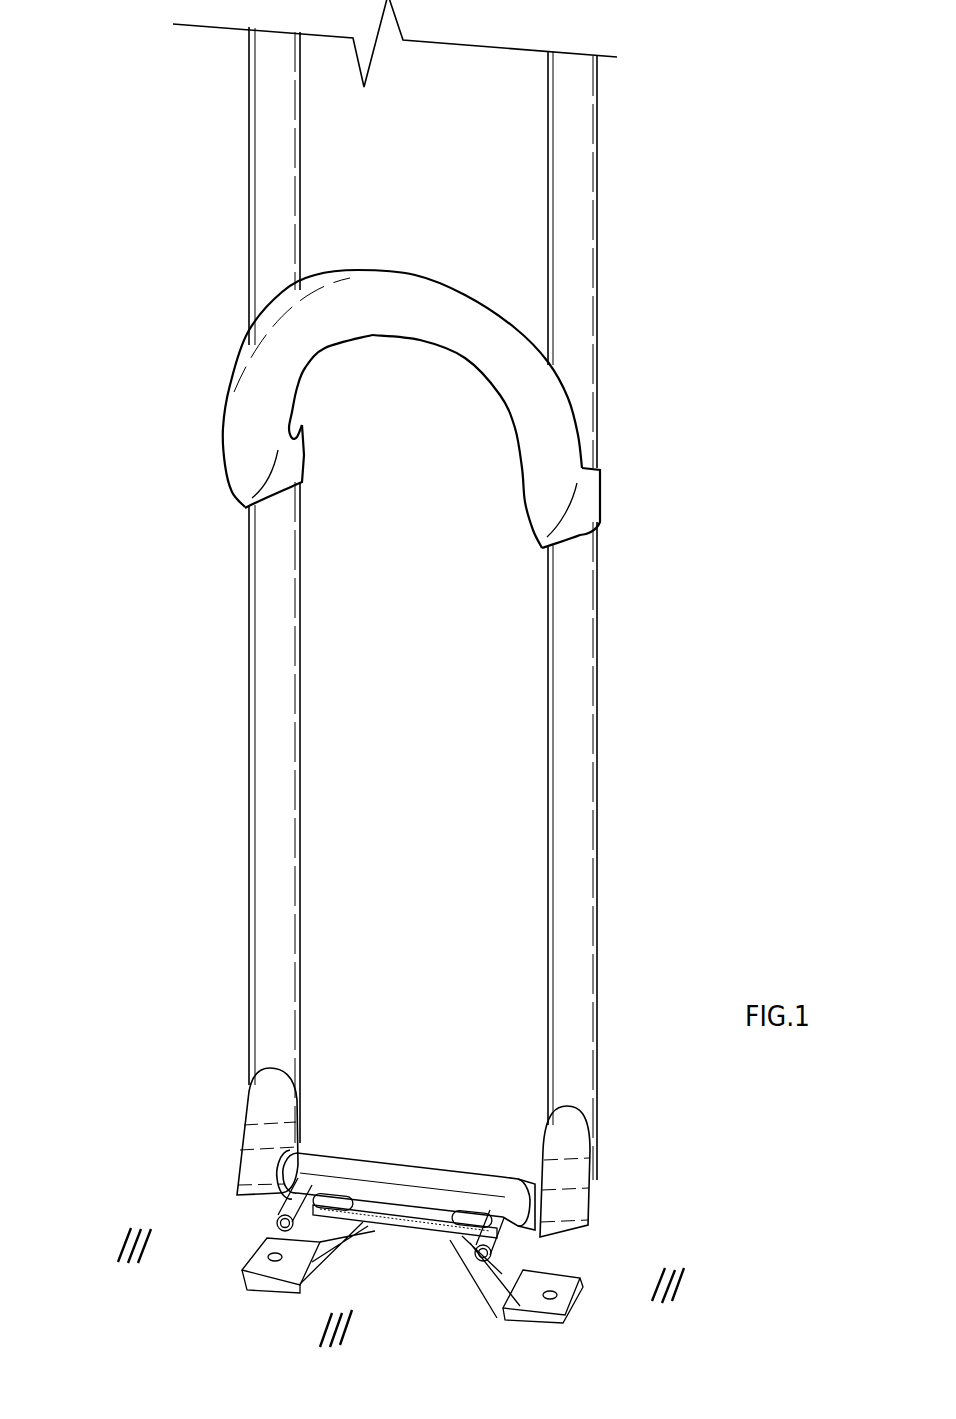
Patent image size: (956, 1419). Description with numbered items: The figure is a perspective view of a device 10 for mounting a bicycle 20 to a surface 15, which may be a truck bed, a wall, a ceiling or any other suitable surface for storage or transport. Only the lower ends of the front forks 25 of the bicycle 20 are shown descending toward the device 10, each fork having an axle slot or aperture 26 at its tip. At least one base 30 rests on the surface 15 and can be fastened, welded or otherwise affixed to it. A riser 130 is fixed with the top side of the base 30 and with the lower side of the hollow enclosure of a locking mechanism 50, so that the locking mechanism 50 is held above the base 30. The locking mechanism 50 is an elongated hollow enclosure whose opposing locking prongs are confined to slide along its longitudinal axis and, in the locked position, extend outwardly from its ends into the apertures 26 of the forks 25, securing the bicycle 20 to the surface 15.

The device 10 is at (437, 673).
The surface 15 is at (167, 1250).
The bicycle 20 is at (267, 120).
The front forks 25 is at (272, 910).
The axle slot or aperture 26 is at (235, 1178).
The base 30 is at (533, 1323).
The locking mechanism 50 is at (305, 1172).
The riser 130 is at (348, 1262).